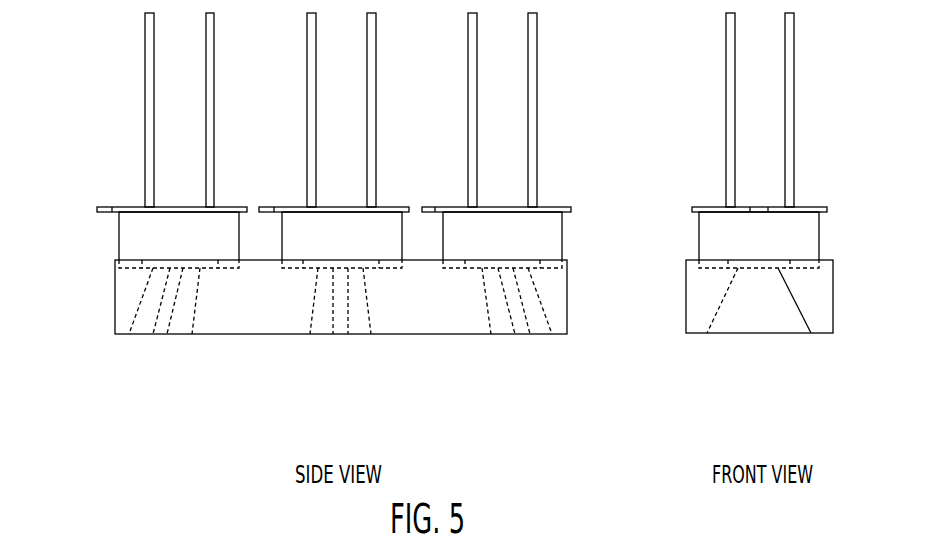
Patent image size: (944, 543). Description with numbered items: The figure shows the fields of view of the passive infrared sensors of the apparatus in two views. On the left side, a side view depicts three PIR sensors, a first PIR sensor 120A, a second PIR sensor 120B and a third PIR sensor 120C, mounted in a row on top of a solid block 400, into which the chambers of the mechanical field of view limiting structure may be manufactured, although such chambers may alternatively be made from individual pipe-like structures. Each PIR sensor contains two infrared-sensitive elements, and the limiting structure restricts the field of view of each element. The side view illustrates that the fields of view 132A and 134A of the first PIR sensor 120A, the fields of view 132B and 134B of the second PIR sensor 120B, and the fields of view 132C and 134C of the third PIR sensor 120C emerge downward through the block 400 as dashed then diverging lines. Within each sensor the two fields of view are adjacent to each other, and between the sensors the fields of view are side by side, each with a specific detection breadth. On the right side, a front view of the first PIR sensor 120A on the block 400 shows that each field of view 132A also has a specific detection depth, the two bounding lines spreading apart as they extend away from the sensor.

The solid block 400 is at (115, 300).
The first PIR sensor 120A is at (130, 207).
The second PIR sensor 120B is at (293, 207).
The third PIR sensor 120C is at (456, 207).
The field of view 132A is at (153, 334).
The field of view 134A is at (192, 334).
The field of view 132B is at (333, 334).
The field of view 134B is at (371, 334).
The field of view 132C is at (515, 334).
The field of view 134C is at (530, 334).